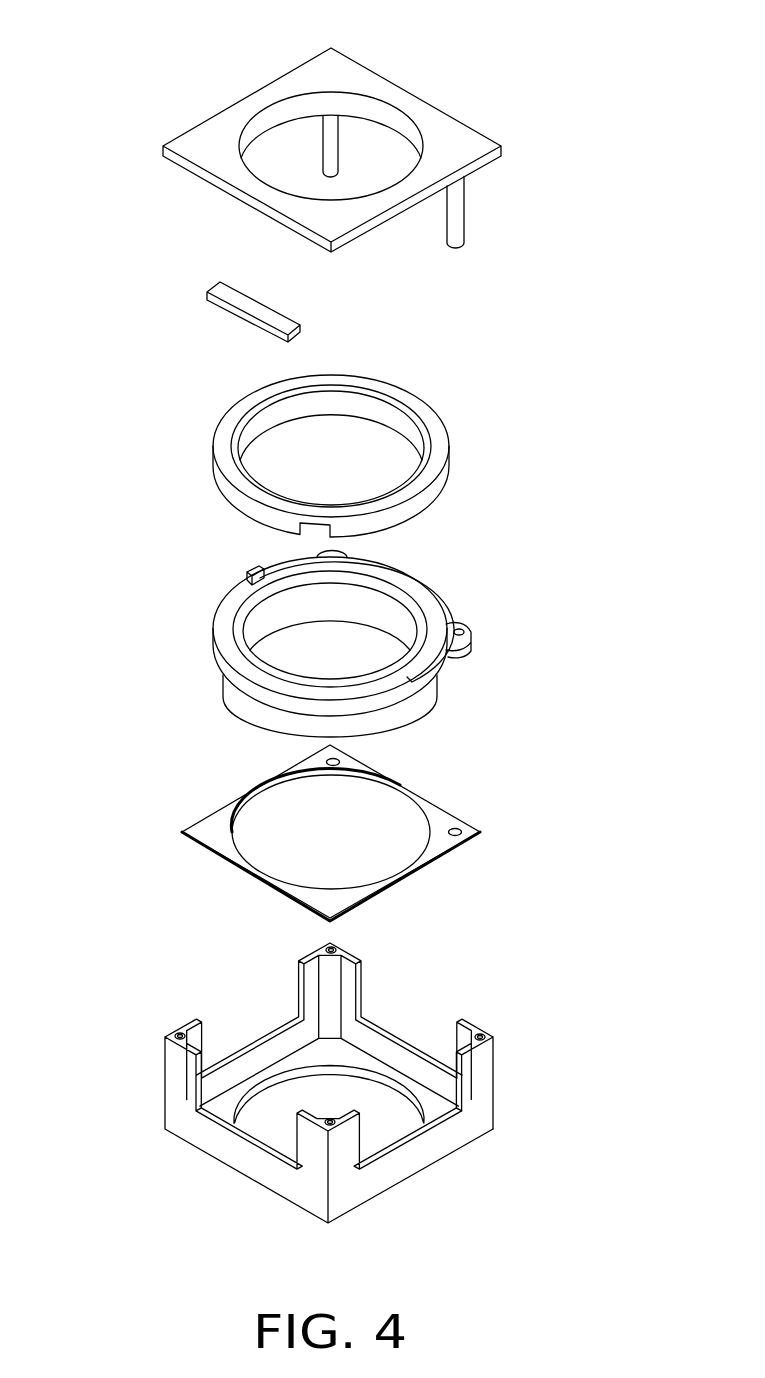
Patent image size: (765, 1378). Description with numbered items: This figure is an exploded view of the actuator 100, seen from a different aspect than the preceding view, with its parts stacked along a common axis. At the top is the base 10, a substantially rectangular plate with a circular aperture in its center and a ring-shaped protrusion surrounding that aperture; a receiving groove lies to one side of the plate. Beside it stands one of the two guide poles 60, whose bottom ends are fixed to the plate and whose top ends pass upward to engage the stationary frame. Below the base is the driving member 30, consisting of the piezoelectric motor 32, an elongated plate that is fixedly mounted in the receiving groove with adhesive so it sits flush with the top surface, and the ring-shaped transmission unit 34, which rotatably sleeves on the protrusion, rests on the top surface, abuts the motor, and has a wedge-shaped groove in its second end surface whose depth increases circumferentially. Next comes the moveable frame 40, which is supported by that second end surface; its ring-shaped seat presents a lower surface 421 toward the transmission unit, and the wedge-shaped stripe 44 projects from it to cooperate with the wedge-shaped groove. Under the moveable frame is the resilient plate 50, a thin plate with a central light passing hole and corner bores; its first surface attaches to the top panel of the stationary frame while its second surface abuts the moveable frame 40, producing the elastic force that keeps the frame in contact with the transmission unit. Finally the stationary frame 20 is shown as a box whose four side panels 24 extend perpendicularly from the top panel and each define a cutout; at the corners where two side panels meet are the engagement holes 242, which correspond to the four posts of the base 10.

The actuator 100 is at (162, 55).
The base 10 is at (195, 140).
The guide poles 60 is at (453, 210).
The driving member 30 is at (136, 324).
The piezoelectric motor 32 is at (238, 300).
The transmission unit 34 is at (227, 425).
The moveable frame 40 is at (440, 570).
The lower surface 421 is at (227, 625).
The wedge-shaped stripe 44 is at (262, 570).
The resilient plate 50 is at (212, 825).
The stationary frame 20 is at (497, 970).
The side panels 24 is at (483, 1077).
The engagement holes 242 is at (485, 1032).